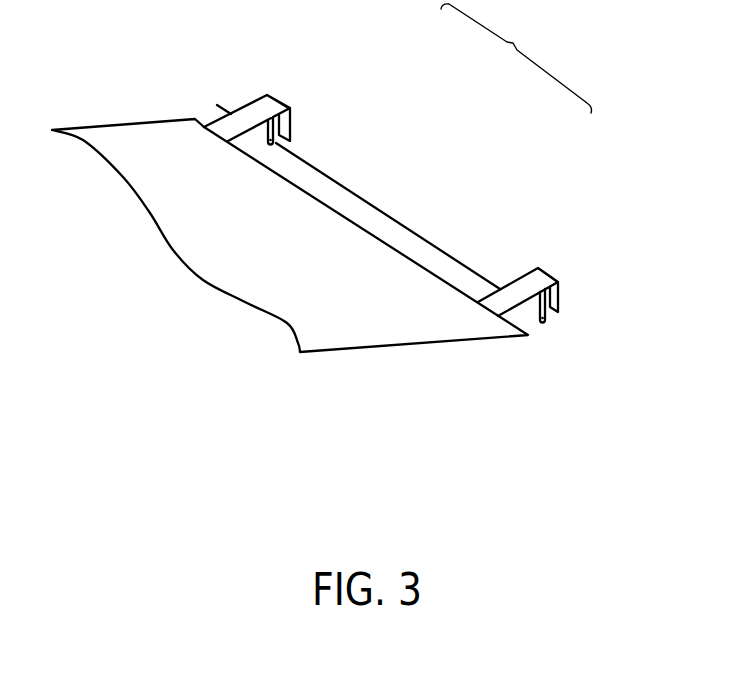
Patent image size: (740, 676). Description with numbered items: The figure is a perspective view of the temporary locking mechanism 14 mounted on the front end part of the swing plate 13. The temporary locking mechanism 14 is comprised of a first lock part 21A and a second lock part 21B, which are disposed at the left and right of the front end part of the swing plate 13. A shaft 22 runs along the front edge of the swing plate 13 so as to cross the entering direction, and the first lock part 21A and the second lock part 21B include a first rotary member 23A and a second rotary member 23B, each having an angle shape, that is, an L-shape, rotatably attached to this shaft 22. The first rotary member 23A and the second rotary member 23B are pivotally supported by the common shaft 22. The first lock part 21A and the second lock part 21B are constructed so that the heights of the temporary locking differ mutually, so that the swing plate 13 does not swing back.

The swing plate 13 is at (388, 325).
The temporary locking mechanism 14 is at (516, 58).
The first lock part 21A is at (298, 88).
The second lock part 21B is at (529, 254).
The shaft 22 is at (370, 197).
The first rotary member 23A is at (248, 113).
The second rotary member 23B is at (540, 281).